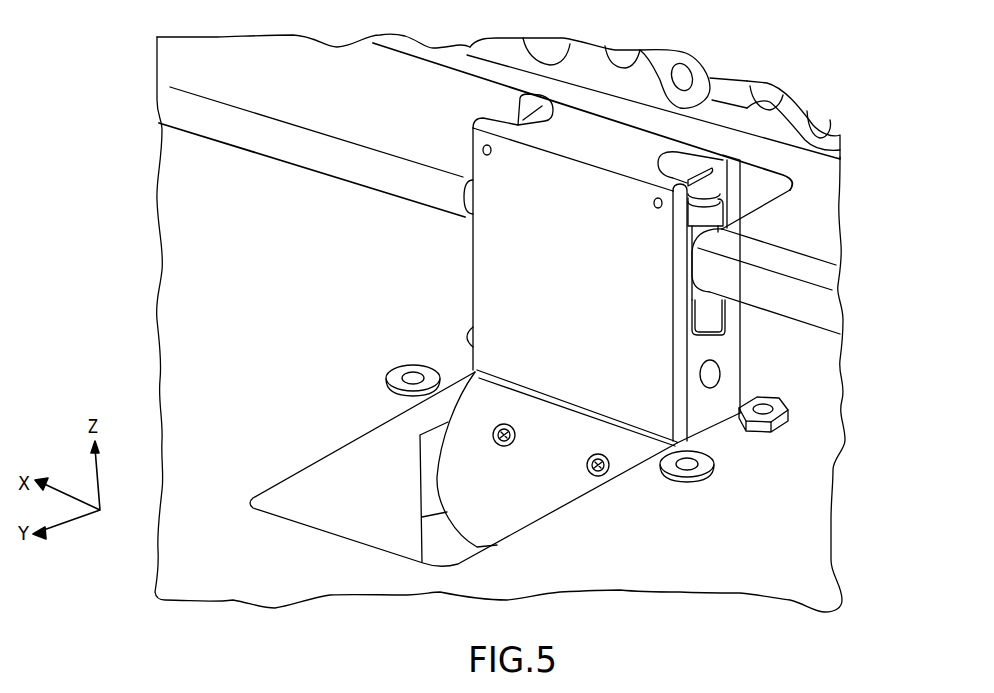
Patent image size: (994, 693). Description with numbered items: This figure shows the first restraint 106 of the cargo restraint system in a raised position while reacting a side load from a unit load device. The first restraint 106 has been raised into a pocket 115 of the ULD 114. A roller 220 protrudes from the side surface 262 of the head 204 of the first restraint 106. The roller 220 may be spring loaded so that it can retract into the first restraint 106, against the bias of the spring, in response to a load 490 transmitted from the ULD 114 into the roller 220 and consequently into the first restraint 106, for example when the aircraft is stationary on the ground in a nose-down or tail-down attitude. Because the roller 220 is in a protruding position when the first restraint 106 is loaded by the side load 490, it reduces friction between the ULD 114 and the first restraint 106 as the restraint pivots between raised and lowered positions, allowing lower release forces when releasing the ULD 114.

The ULD 114 is at (373, 110).
The pocket 115 is at (797, 181).
The load 490 is at (717, 236).
The head 204 is at (500, 240).
The first restraint 106 is at (455, 288).
The roller 220 is at (712, 302).
The side surface 262 is at (715, 342).